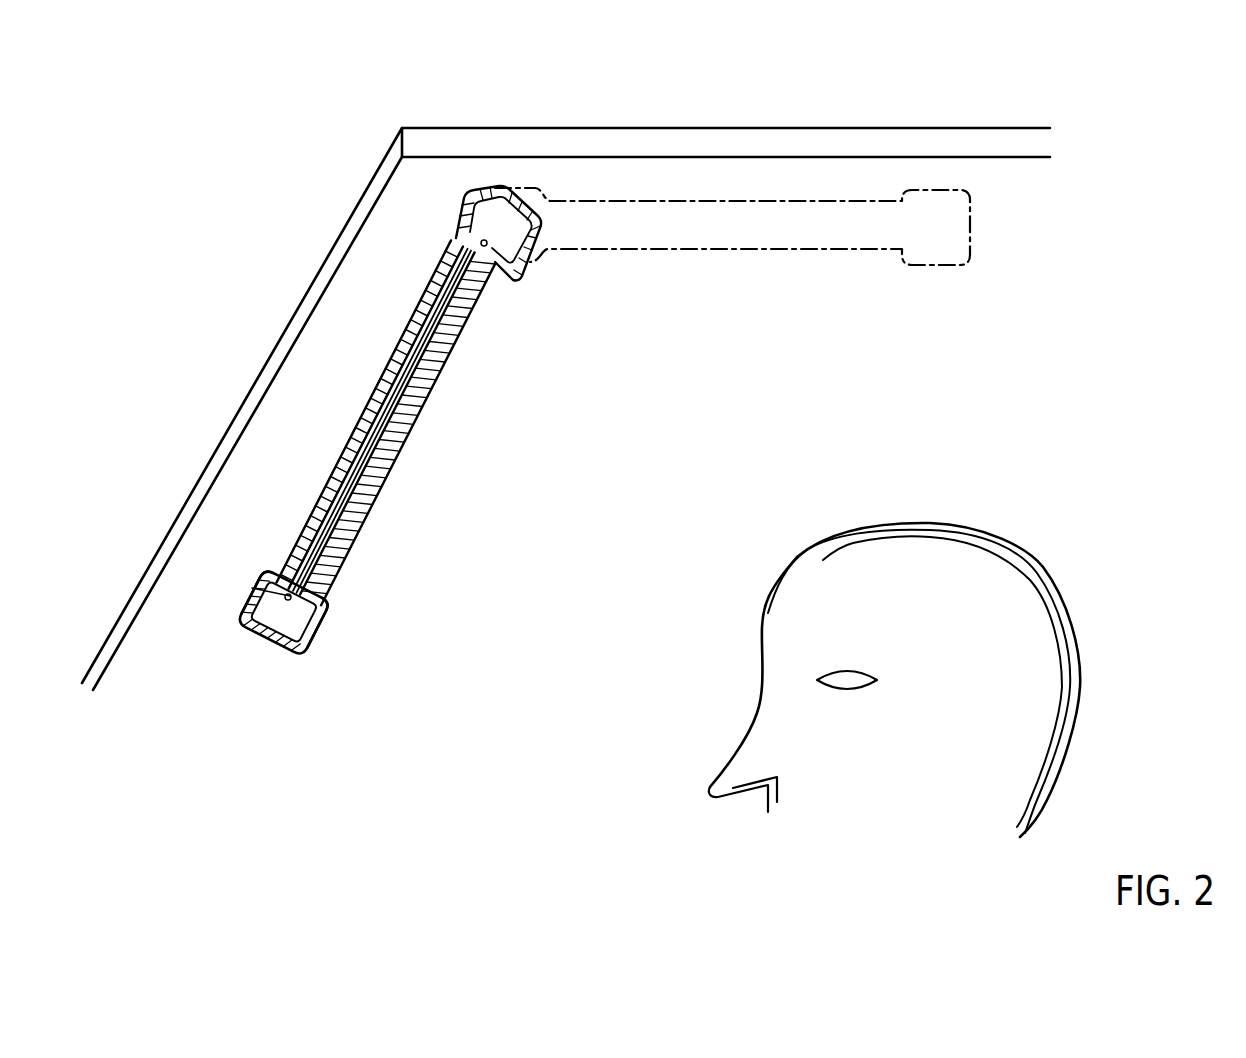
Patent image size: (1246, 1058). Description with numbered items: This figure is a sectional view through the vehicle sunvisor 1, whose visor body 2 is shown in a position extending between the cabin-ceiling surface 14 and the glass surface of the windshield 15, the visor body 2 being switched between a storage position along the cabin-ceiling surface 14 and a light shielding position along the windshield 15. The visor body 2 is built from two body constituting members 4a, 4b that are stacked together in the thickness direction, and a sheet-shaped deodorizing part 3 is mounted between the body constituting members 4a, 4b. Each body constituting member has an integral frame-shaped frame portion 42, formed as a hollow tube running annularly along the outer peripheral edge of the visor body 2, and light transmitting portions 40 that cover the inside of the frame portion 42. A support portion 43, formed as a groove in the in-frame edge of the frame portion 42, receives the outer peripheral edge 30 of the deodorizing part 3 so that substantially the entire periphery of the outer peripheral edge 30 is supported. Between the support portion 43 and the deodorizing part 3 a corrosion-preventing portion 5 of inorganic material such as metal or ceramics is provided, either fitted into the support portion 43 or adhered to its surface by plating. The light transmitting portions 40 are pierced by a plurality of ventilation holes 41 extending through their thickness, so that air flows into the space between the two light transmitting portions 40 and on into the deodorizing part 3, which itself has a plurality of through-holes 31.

The vehicle sunvisor 1 is at (473, 459).
The visor body 2 is at (260, 676).
The deodorizing part 3 is at (335, 598).
The body constituting member 4a is at (278, 660).
The body constituting member 4b is at (242, 652).
The corrosion-preventing portion 5 is at (507, 258).
The cabin-ceiling surface 14 is at (775, 137).
The windshield 15 is at (252, 396).
The outer peripheral edge 30 is at (293, 548).
The through-holes 31 is at (377, 507).
The light transmitting portions 40 is at (342, 460).
The ventilation holes 41 is at (355, 442).
The frame portion 42 is at (235, 612).
The support portion 43 is at (250, 588).